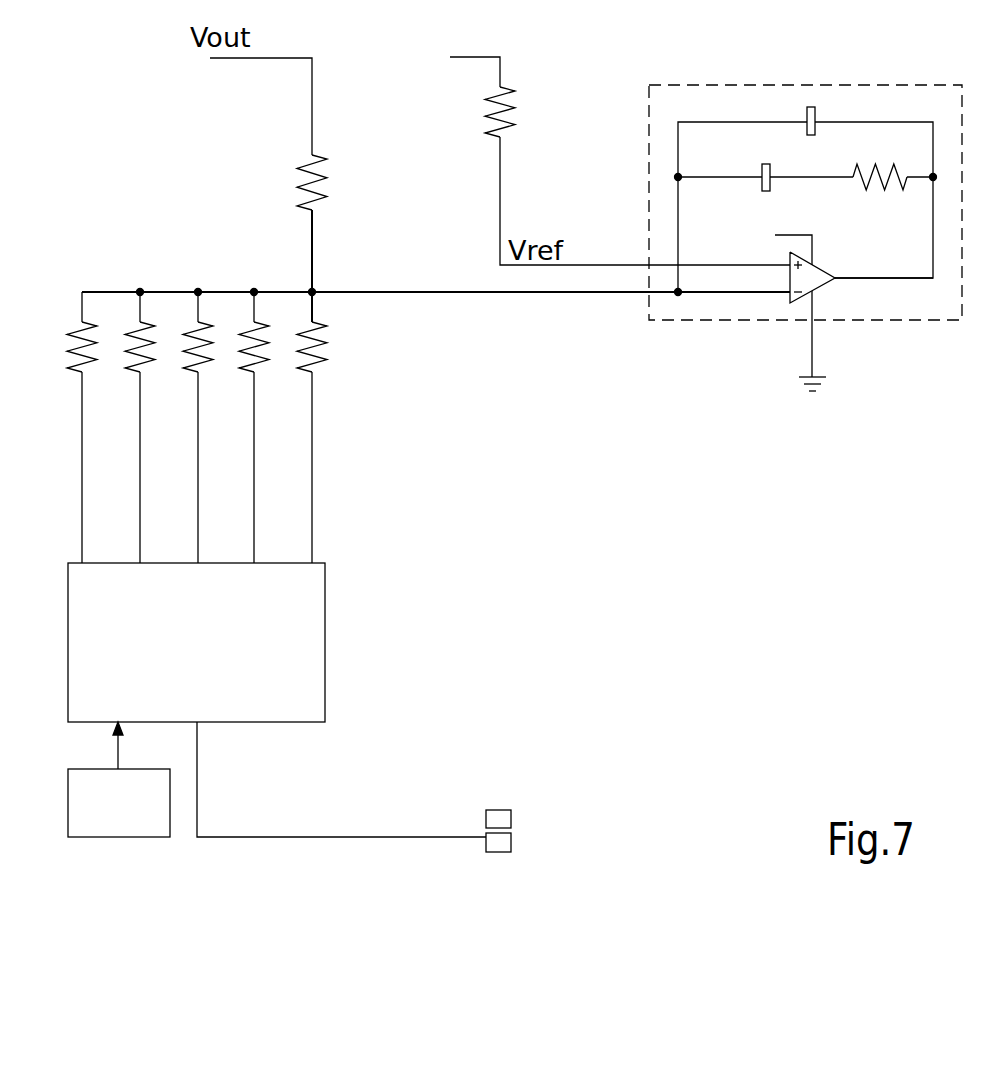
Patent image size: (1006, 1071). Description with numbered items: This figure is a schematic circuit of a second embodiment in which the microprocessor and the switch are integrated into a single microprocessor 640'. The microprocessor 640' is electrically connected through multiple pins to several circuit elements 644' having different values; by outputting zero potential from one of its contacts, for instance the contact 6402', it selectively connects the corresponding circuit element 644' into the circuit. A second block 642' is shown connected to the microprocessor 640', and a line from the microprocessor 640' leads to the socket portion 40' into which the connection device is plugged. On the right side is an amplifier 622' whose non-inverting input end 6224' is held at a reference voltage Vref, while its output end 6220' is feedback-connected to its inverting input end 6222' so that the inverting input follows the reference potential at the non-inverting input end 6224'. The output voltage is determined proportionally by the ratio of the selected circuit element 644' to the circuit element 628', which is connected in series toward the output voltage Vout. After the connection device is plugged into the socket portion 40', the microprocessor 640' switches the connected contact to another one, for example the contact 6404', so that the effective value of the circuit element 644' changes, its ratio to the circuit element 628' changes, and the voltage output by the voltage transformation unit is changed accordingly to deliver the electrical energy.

The circuit element 628' is at (243, 182).
The circuit elements 644' is at (259, 386).
The contact 6404' is at (361, 467).
The contact 6402' is at (413, 467).
The microprocessor 640' is at (267, 643).
The control unit 642' is at (115, 820).
The socket portion 40' is at (536, 865).
The amplifier 622' is at (780, 275).
The output end 6220' is at (899, 328).
The inverting input end 6222' is at (739, 324).
The non-inverting input end 6224' is at (715, 344).